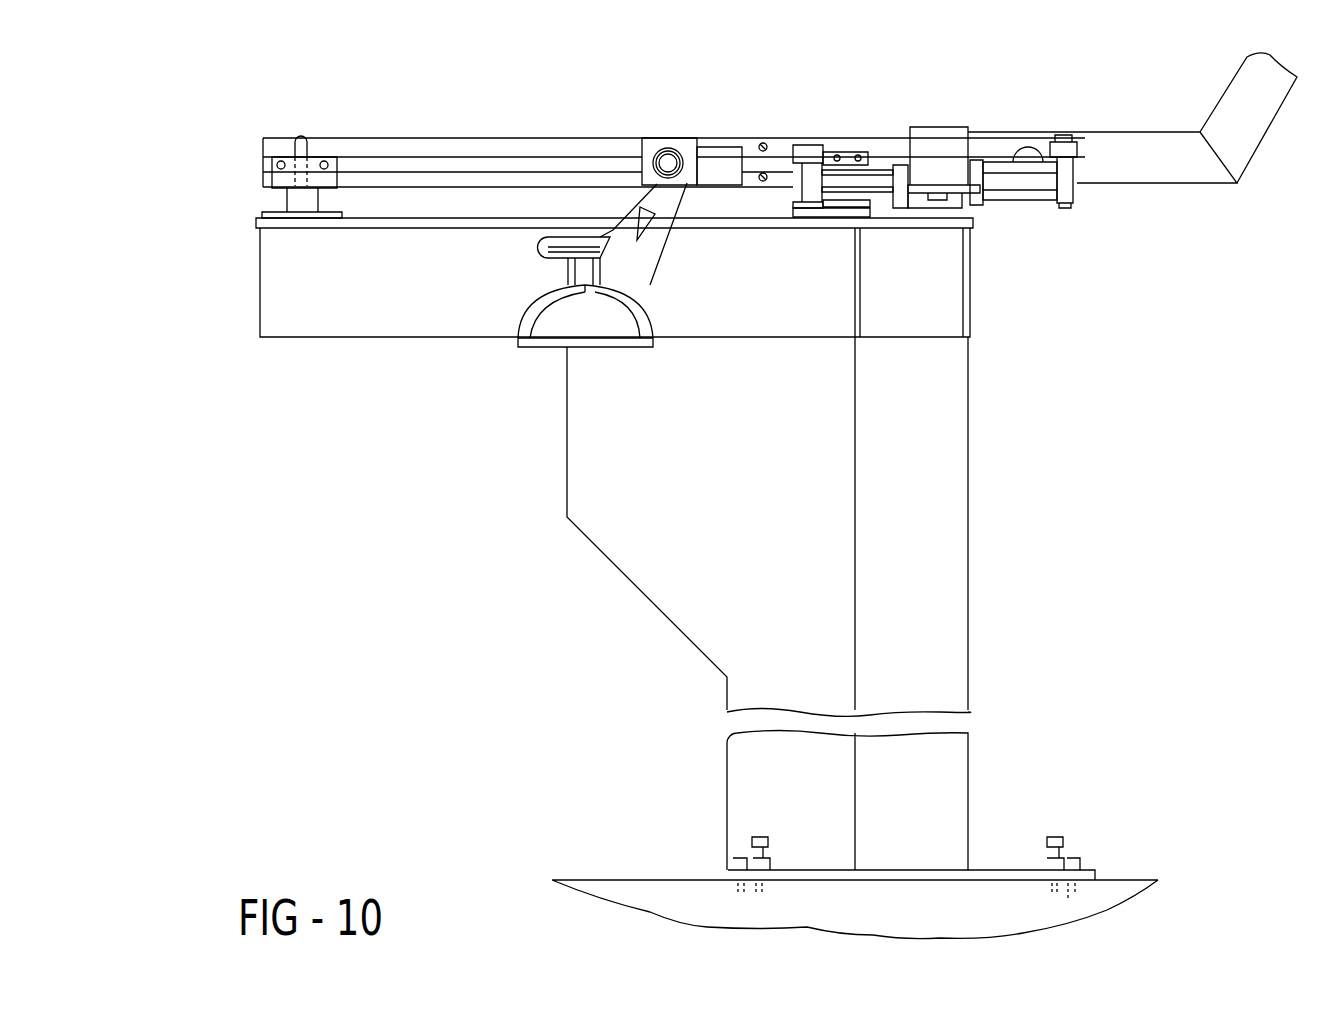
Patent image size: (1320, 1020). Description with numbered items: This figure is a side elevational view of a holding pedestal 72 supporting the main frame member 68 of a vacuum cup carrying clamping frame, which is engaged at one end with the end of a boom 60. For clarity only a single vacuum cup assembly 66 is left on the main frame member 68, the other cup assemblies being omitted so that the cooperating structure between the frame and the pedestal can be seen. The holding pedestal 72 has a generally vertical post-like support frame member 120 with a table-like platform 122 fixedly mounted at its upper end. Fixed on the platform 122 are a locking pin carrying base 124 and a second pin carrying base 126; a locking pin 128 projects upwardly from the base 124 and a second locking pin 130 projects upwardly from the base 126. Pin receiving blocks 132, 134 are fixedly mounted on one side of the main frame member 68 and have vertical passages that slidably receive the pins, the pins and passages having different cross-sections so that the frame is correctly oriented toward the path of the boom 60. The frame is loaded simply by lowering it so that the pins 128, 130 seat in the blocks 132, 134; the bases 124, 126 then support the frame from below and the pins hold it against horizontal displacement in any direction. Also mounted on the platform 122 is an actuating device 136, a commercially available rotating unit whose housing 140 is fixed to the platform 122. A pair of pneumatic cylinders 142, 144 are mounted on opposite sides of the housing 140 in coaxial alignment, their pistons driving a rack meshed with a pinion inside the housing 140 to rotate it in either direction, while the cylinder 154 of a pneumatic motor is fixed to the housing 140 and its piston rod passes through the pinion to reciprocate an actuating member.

The boom 60 is at (1170, 172).
The vacuum cup assembly 66 is at (688, 306).
The main frame member 68 is at (528, 160).
The holding pedestal 72 is at (590, 423).
The support frame member 120 is at (957, 592).
The platform 122 is at (335, 317).
The locking pin carrying base 124 is at (832, 210).
The pin carrying base 126 is at (300, 200).
The locking pin 128 is at (830, 142).
The second locking pin 130 is at (307, 175).
The pin receiving block 132 is at (855, 152).
The pin receiving block 134 is at (272, 178).
The actuating device 136 is at (986, 116).
The housing 140 is at (965, 210).
The pneumatic cylinder 142 is at (865, 188).
The pneumatic cylinder 144 is at (1040, 150).
The cylinder 154 is at (925, 135).